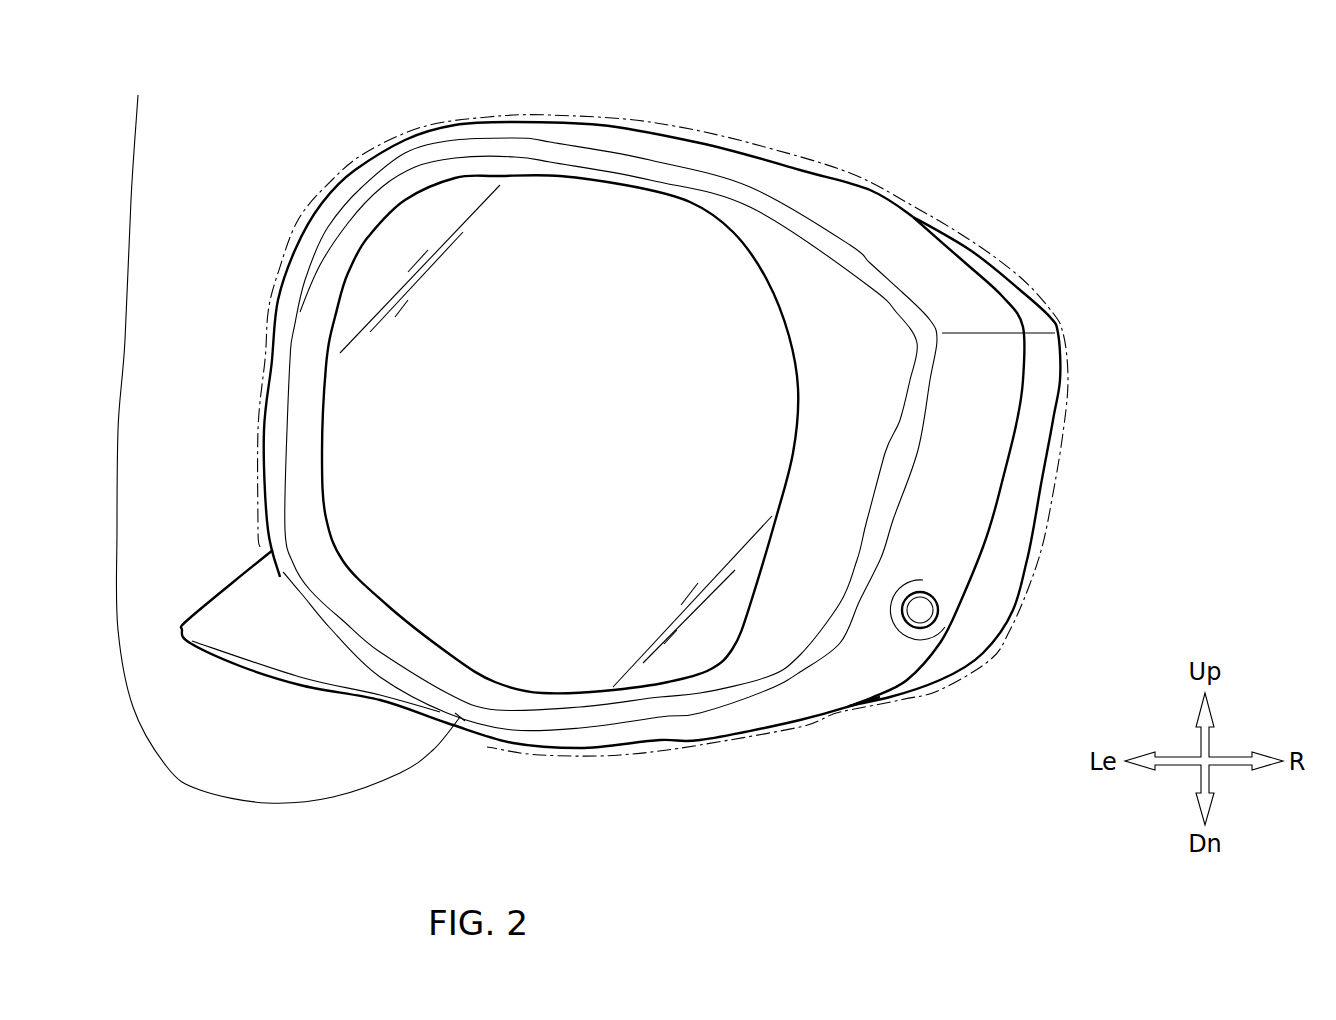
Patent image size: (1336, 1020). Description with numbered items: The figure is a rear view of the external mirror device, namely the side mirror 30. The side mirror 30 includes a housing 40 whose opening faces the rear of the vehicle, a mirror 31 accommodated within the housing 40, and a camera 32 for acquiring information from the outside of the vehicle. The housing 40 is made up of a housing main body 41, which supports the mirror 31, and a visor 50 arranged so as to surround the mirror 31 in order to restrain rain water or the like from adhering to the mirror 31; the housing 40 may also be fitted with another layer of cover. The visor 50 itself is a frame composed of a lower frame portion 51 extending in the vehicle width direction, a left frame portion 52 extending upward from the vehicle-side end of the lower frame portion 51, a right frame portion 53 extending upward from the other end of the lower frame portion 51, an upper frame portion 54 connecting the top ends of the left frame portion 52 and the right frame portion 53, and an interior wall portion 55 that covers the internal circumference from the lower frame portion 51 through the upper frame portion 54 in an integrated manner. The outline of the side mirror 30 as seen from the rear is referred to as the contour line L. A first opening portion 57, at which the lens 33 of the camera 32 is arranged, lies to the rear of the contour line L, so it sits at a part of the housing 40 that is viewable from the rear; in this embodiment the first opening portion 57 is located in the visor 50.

The side mirror 30 is at (672, 798).
The mirror 31 is at (700, 660).
The camera 32 is at (908, 647).
The lens 33 is at (922, 610).
The housing 40 is at (938, 700).
The housing main body 41 is at (1037, 415).
The visor 50 is at (1025, 62).
The lower frame portion 51 is at (290, 432).
The left frame portion 52 is at (277, 413).
The right frame portion 53 is at (950, 470).
The upper frame portion 54 is at (505, 130).
The interior wall portion 55 is at (797, 263).
The first opening portion 57 is at (927, 583).
The contour line L is at (1043, 297).